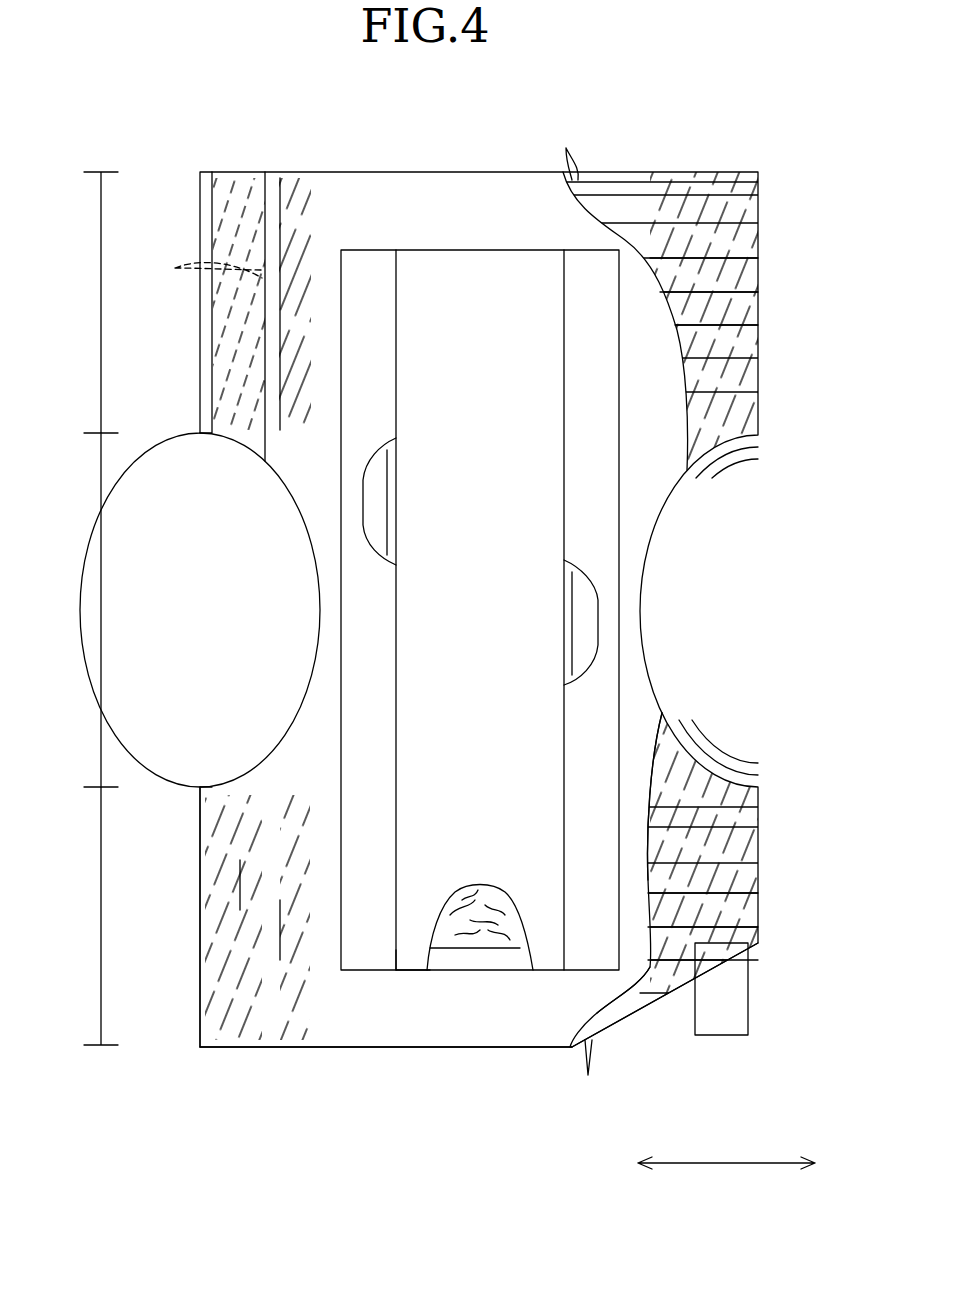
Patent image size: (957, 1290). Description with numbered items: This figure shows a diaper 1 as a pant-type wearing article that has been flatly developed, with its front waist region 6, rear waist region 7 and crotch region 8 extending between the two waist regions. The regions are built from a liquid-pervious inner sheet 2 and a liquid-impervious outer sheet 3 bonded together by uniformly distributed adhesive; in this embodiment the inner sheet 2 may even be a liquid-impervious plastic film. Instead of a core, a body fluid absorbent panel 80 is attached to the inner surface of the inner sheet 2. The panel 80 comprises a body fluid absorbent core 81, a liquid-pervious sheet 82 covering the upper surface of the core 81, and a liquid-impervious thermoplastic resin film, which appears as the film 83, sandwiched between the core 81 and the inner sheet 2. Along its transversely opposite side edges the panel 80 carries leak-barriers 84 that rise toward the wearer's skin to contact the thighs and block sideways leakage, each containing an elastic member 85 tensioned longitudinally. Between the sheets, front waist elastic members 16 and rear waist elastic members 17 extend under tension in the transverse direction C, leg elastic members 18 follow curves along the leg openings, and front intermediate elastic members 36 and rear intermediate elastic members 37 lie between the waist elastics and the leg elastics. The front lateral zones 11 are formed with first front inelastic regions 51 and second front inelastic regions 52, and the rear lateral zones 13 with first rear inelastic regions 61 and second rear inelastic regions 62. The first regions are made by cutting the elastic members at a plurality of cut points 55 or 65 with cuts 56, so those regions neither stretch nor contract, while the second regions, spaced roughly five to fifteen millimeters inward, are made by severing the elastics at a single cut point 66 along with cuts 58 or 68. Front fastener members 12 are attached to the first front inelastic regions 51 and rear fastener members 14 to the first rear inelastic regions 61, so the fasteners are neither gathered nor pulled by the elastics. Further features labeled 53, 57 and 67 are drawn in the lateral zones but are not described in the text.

The diaper 1 is at (772, 108).
The inner sheet 2 is at (472, 1020).
The outer sheet 3 is at (627, 1008).
The front waist region 6 is at (100, 900).
The rear waist region 7 is at (100, 298).
The crotch region 8 is at (100, 613).
The front lateral zones 11 is at (272, 1030).
The front fastener members 12 is at (749, 985).
The rear lateral zones 13 is at (272, 172).
The rear fastener members 14 is at (245, 447).
The front waist elastic members 16 is at (588, 1073).
The rear waist elastic members 17 is at (563, 146).
The leg elastic members 18 is at (690, 744).
The front intermediate elastic members 36 is at (680, 892).
The rear intermediate elastic members 37 is at (738, 298).
The first front inelastic regions 51 is at (262, 1069).
The second front inelastic regions 52 is at (310, 1069).
The intermediate region of rear flap 53 is at (650, 1069).
The cut points 55 is at (732, 895).
The cuts 56 is at (722, 947).
The rear inner sheet 57 is at (650, 845).
The cuts 58 is at (652, 938).
The first rear inelastic regions 61 is at (262, 164).
The second rear inelastic regions 62 is at (308, 164).
The cut points 65 is at (745, 258).
The cut point 66 is at (790, 327).
The front inner sheet 67 is at (700, 347).
The cuts 68 is at (300, 222).
The body fluid absorbent panel 80 is at (474, 239).
The body fluid absorbent core 81 is at (503, 925).
The liquid-pervious sheet 82 is at (410, 953).
The backsheet 83 is at (452, 958).
The leak-barriers 84 is at (580, 300).
The elastic member 85 is at (388, 492).
The transverse direction C is at (725, 1165).